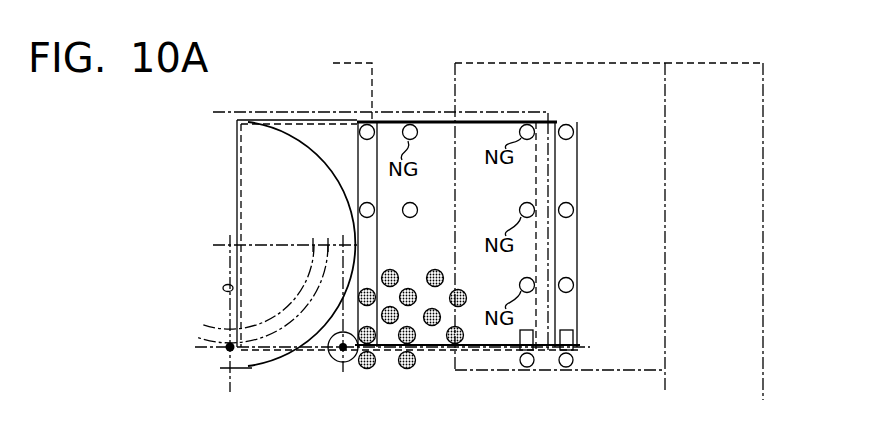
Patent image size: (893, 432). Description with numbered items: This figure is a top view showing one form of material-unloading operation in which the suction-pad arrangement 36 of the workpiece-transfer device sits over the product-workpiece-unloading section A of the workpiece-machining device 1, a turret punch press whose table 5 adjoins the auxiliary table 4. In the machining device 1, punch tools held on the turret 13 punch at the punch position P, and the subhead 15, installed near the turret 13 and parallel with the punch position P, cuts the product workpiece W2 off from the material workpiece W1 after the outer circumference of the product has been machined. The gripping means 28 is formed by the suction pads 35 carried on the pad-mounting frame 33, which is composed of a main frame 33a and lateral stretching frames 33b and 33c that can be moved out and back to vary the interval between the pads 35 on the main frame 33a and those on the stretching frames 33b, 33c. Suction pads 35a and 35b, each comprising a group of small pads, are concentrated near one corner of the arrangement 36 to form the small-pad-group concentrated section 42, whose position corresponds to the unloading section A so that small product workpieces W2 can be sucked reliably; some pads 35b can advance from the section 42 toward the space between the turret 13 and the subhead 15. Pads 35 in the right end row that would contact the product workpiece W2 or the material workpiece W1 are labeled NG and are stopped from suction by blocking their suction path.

The workpiece-machining device 1 is at (200, 192).
The auxiliary table 4 is at (716, 80).
The table 5 is at (580, 78).
The turret 13 is at (255, 360).
The subhead 15 is at (334, 362).
The gripping means 28 is at (588, 210).
The pad-mounting frame 33 is at (505, 187).
The main frame 33a is at (437, 120).
The stretching frame 33b is at (365, 160).
The stretching frame 33c is at (570, 148).
The suction pad 35 is at (540, 348).
The suction pad 35a is at (433, 327).
The suction pad 35b is at (371, 344).
The suction-pad arrangement 36 is at (588, 283).
The small-pad-group concentrated section 42 is at (472, 336).
The product-workpiece-unloading section A is at (345, 310).
The punch position P is at (226, 352).
The material workpiece W1 is at (512, 114).
The product workpiece W2 is at (470, 138).